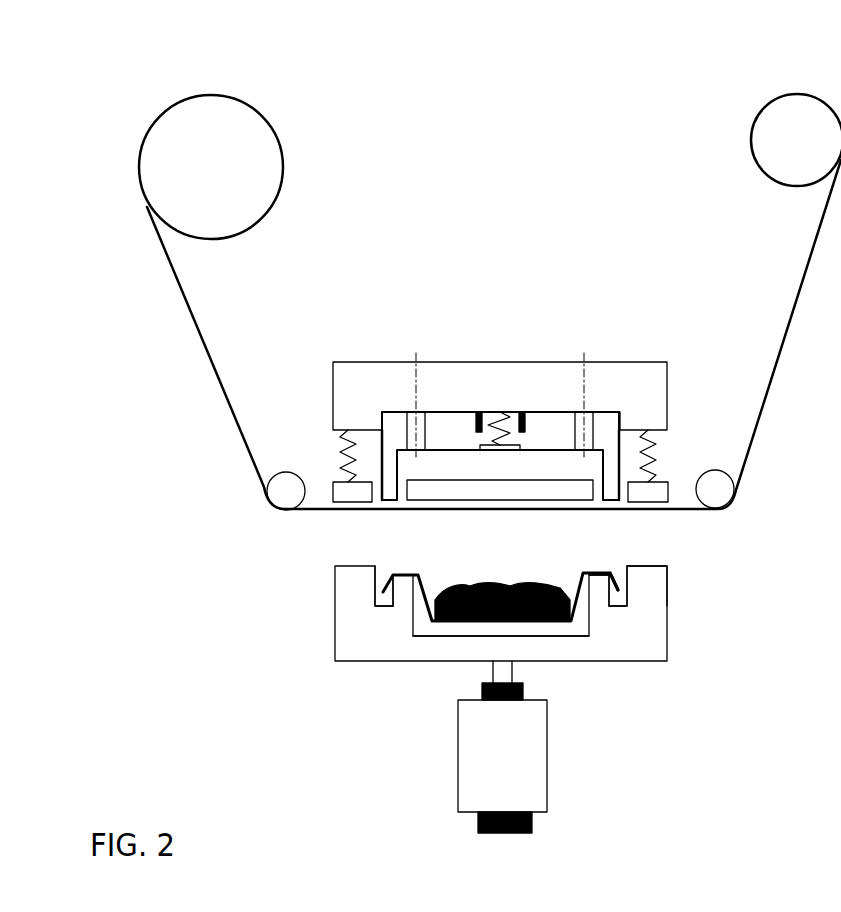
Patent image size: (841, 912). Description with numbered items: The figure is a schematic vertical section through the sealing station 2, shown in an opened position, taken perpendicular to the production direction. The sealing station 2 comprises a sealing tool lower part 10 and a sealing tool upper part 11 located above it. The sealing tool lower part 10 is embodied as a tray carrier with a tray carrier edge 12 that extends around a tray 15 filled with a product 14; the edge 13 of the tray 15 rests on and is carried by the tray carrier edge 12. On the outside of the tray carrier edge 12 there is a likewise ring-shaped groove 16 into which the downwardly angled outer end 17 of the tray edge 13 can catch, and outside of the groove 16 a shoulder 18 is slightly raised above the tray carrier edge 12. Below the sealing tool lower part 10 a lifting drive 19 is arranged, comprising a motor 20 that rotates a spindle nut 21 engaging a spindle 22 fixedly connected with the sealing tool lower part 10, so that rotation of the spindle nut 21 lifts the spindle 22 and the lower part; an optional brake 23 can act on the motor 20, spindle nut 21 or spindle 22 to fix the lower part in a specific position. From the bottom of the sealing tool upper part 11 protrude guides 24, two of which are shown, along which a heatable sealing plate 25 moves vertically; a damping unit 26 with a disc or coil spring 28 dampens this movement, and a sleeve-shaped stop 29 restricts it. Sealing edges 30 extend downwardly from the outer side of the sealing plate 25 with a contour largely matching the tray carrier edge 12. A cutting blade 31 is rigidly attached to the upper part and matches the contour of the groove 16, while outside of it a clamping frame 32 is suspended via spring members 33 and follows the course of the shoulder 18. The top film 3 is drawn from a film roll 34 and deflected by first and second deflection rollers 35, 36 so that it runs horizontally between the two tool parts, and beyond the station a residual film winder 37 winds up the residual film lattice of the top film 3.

The sealing station 2 is at (438, 148).
The top film 3 is at (797, 320).
The sealing tool lower part 10 is at (650, 638).
The sealing tool upper part 11 is at (655, 367).
The tray carrier edge 12 is at (600, 582).
The tray edge 13 is at (415, 574).
The product 14 is at (482, 582).
The tray 15 is at (430, 612).
The groove 16 is at (376, 600).
The outer end of the tray edge 17 is at (618, 590).
The shoulder 18 is at (647, 565).
The drive 19 is at (430, 806).
The motor 20 is at (535, 780).
The spindle nut 21 is at (523, 690).
The spindle 22 is at (505, 671).
The brake 23 is at (532, 820).
The guides 24 is at (408, 420).
The sealing plate 25 is at (455, 462).
The damping unit 26 is at (541, 430).
The disc or coil spring 28 is at (500, 425).
The stop 29 is at (478, 416).
The sealing edges 30 is at (407, 488).
The cutting blade 31 is at (380, 443).
The clamping frame 32 is at (343, 482).
The spring members 33 is at (648, 455).
The film roll 34 is at (775, 128).
The first deflection roller 35 is at (730, 490).
The second deflection roller 36 is at (283, 495).
The residual film winder 37 is at (255, 132).